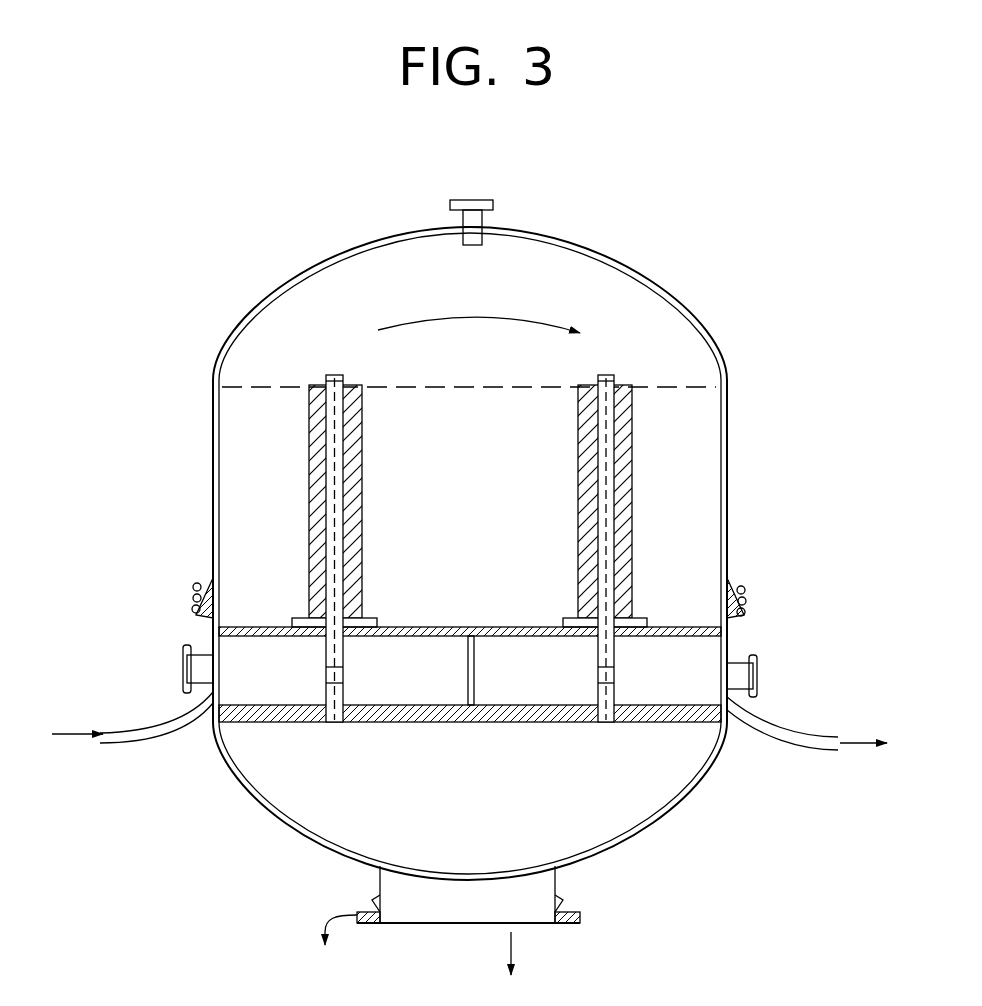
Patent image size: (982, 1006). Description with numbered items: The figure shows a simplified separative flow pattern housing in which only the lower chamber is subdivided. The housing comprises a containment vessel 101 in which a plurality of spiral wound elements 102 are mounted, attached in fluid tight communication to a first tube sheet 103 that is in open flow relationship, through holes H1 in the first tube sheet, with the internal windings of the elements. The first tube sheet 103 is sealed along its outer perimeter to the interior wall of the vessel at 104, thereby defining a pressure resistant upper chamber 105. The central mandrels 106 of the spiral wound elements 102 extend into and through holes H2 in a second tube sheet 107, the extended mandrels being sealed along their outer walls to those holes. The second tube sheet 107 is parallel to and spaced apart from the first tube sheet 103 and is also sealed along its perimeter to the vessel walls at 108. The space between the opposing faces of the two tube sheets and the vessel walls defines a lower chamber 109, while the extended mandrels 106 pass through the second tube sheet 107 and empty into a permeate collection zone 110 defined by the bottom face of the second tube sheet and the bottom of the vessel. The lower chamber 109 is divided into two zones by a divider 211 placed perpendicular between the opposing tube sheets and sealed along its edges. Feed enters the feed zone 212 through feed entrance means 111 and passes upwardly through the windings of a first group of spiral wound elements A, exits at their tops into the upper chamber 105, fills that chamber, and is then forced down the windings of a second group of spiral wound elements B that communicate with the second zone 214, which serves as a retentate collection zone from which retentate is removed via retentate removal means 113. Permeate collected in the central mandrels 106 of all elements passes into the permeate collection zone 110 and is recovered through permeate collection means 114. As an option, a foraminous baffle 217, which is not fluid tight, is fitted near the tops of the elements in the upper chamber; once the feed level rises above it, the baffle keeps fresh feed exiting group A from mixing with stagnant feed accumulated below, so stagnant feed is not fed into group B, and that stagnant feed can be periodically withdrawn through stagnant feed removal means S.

The containment vessel 101 is at (514, 553).
The spiral wound element 102 is at (312, 462).
The first tube sheet 103 is at (682, 626).
The fluid tight communication of first tube sheet with vessel wall 104 is at (733, 637).
The upper chamber 105 is at (656, 322).
The central mandrels 106 is at (344, 674).
The second tube sheet 107 is at (646, 723).
The fluid tight communication of second tube sheet with vessel wall 108 is at (712, 768).
The lower chamber 109 is at (262, 686).
The permeate collection zone 110 is at (600, 826).
The feed entrance means 111 is at (52, 734).
The retentate removal means 113 is at (851, 741).
The permeate collection means 114 is at (328, 946).
The divider 211 is at (475, 666).
The feed zone 212 is at (405, 670).
The second zone 214 is at (536, 670).
The foraminous baffle 217 is at (705, 392).
The first group of spiral wound elements A is at (366, 464).
The second group of spiral wound elements B is at (638, 470).
The stagnant feed removal means S is at (192, 592).
The holes in the first tube sheet H1 is at (325, 637).
The height H2 is at (330, 724).